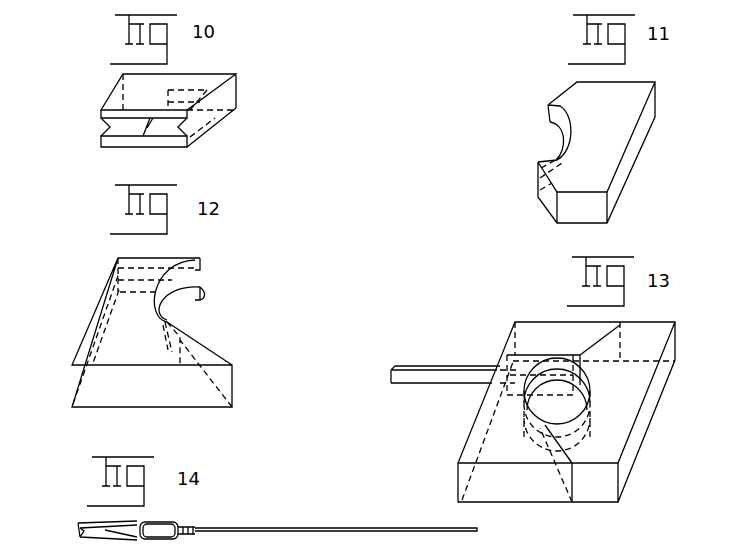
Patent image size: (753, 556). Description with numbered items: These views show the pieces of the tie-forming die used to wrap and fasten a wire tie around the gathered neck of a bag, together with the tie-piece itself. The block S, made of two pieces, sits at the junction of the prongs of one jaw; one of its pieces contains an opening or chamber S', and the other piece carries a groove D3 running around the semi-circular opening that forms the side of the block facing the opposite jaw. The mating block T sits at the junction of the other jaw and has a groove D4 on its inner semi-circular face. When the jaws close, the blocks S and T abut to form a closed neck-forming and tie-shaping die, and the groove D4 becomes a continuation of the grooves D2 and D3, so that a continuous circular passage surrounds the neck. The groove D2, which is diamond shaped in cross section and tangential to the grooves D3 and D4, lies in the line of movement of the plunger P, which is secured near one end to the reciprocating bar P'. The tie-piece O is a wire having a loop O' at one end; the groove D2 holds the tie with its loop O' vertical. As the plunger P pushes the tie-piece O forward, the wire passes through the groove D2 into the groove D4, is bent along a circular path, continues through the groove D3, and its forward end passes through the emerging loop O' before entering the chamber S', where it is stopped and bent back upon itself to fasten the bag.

In FIG. 10, the block S is at (168, 100).
In FIG. 13, the block S is at (560, 375).
In FIG. 10, the chamber S' is at (173, 136).
In FIG. 10, the groove D2 is at (103, 127).
In FIG. 12, the groove D2 is at (116, 274).
In FIG. 12, the groove D3 is at (163, 305).
In FIG. 11, the groove D4 is at (554, 132).
In FIG. 11, the block T is at (617, 196).
In FIG. 12, the block T is at (152, 332).
In FIG. 13, the block T is at (648, 428).
In FIG. 13, the plunger P is at (445, 364).
In FIG. 14, the reciprocating bar P' is at (94, 525).
In FIG. 14, the tie-piece O is at (336, 516).
In FIG. 14, the loop O' is at (167, 519).